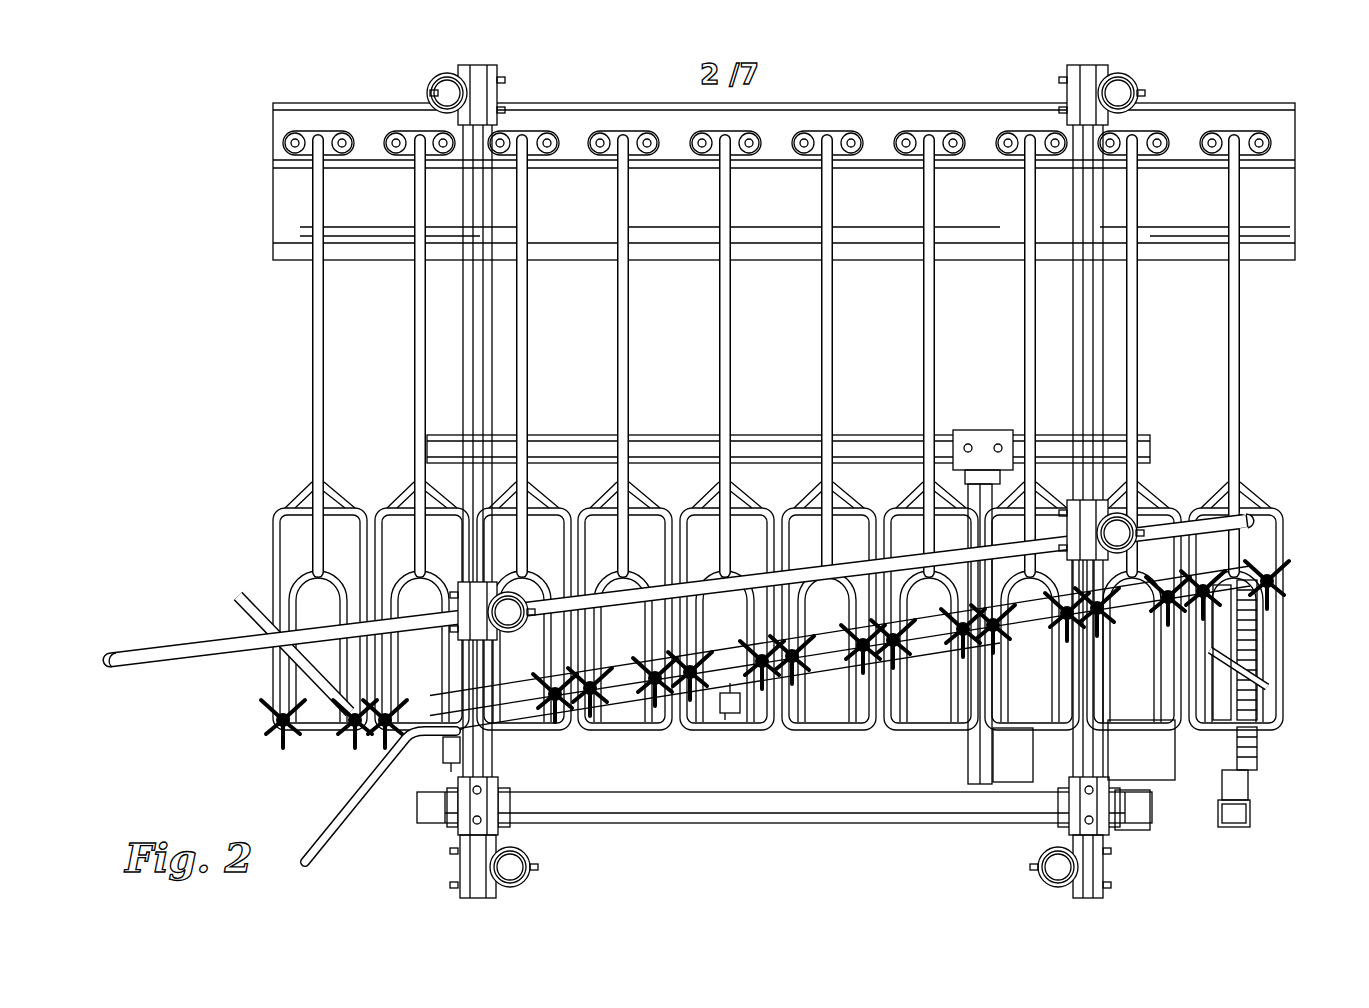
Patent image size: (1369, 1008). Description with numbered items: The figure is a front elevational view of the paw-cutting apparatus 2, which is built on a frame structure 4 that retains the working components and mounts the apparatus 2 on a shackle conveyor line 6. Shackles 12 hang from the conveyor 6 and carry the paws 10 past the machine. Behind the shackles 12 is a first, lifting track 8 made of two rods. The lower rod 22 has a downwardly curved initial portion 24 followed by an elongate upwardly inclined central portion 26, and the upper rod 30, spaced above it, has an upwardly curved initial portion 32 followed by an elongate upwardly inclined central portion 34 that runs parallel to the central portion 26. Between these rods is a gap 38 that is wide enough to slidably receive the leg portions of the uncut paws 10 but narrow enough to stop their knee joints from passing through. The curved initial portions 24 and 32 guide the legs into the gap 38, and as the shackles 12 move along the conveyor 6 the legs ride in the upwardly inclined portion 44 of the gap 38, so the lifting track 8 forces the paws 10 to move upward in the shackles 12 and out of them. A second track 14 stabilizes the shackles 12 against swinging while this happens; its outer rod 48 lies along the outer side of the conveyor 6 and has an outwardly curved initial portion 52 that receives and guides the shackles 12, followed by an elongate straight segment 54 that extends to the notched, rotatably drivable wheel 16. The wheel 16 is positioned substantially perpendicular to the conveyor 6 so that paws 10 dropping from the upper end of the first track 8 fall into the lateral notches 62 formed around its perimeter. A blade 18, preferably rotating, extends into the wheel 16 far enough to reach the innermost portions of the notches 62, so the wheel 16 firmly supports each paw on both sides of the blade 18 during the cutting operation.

The paw-cutting apparatus 2 is at (1308, 94).
The frame structure 4 is at (482, 222).
The shackle conveyor line 6 is at (288, 216).
The first track 8 is at (840, 666).
The gap 38 is at (622, 702).
The paws 10 is at (566, 728).
The shackles 12 is at (305, 497).
The second track 14 is at (678, 564).
The notched, rotatably drivable wheel 16 is at (1258, 748).
The blade 18 is at (1250, 800).
The lower rod 22 is at (624, 727).
The elongate upwardly inclined central portion 26 is at (738, 716).
The downwardly curved initial portion 24 is at (335, 825).
The upper rod 30 is at (778, 632).
The elongate upwardly inclined central portion 34 is at (822, 655).
The upwardly curved initial portion 32 is at (240, 612).
The upwardly inclined portion 44 is at (830, 695).
The outer rod 48 is at (678, 564).
The elongate straight segment 54 is at (678, 564).
The outwardly curved initial portion 52 is at (757, 590).
The lateral notches 62 is at (1255, 615).